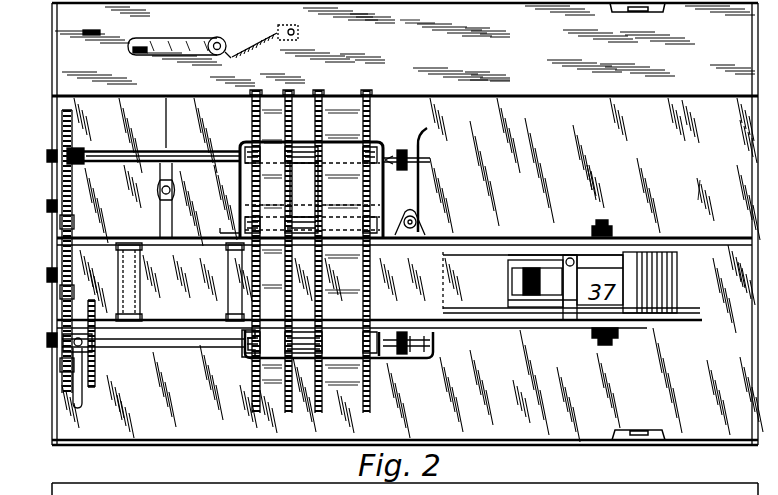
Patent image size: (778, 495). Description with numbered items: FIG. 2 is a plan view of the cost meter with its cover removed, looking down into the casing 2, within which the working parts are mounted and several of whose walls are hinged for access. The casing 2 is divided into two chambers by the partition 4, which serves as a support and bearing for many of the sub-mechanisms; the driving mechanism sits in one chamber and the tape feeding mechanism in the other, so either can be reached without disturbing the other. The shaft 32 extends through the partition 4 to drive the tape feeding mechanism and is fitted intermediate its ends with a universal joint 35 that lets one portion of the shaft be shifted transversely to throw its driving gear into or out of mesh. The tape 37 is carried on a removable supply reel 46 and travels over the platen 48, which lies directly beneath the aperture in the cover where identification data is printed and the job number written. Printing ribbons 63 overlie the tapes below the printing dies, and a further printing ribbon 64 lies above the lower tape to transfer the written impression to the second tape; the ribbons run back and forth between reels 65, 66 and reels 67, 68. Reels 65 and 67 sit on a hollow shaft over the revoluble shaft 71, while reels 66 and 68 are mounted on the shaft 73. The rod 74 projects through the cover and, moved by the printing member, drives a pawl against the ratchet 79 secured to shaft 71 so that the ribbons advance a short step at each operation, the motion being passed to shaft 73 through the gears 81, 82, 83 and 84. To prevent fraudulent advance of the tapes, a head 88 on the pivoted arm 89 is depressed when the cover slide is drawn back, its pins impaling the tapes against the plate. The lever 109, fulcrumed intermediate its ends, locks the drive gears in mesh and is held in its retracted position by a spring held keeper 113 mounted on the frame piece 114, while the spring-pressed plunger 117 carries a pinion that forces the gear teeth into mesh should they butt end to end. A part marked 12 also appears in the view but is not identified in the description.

The casing 2 is at (750, 165).
The partition 4 is at (675, 236).
The top board 12 is at (430, 14).
The shaft 32 is at (168, 152).
The universal joint 35 is at (158, 200).
The tape 37 is at (149, 282).
The supply reel 46 is at (676, 316).
The platen 48 is at (243, 248).
The printing ribbons 63 is at (246, 357).
The printing ribbon 64 is at (340, 130).
The reel 65 is at (255, 413).
The reel 66 is at (252, 112).
The reel 67 is at (368, 410).
The reel 68 is at (370, 119).
The shaft 71 is at (180, 345).
The shaft 73 is at (103, 151).
The rod 74 is at (82, 398).
The ratchet 79 is at (97, 372).
The gear 81 is at (62, 365).
The gear 82 is at (62, 292).
The gear 83 is at (62, 223).
The gear 84 is at (62, 175).
The head 88 is at (510, 288).
The arm 89 is at (543, 265).
The lever 109 is at (142, 57).
The keeper 113 is at (185, 39).
The frame piece 114 is at (501, 68).
The plunger 117 is at (92, 29).